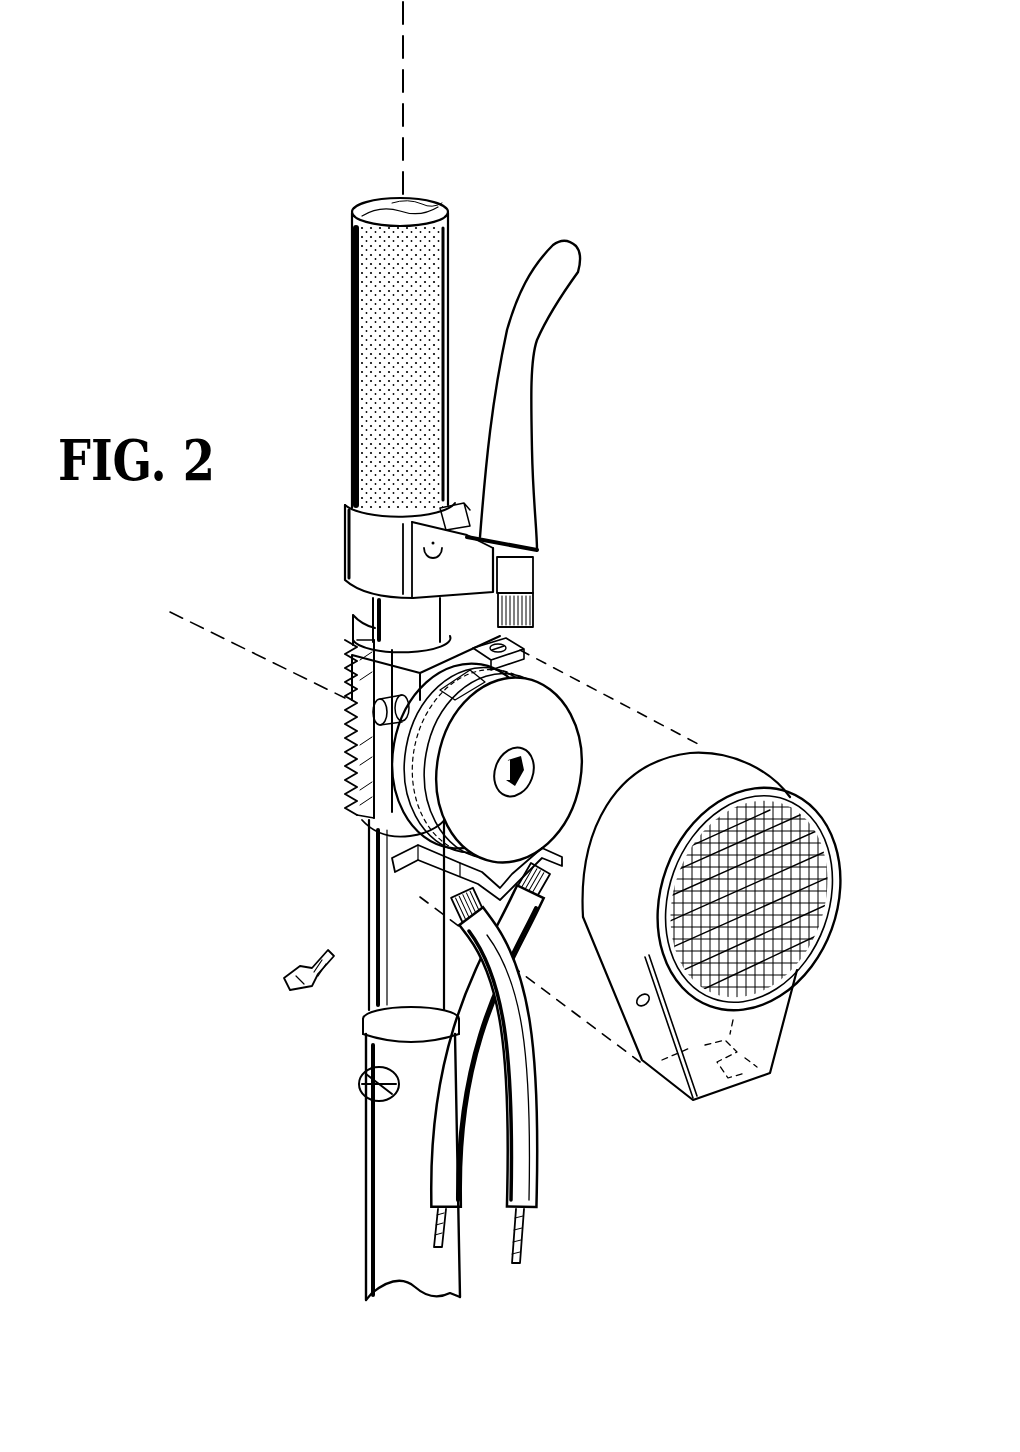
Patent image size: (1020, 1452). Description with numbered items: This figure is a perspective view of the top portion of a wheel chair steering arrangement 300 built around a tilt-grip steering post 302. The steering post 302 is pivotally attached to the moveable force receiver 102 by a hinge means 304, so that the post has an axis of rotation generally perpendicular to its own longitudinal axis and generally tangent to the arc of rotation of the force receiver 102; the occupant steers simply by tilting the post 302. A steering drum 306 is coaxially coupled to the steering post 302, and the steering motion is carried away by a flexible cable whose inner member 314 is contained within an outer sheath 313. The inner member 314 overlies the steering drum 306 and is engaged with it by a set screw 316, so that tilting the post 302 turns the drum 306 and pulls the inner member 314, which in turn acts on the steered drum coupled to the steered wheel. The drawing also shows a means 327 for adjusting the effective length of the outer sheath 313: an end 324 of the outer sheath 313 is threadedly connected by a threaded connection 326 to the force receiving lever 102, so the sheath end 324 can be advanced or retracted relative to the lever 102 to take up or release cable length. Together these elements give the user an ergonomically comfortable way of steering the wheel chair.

The force receiver 102 is at (393, 1135).
The clamp assembly 300 is at (585, 568).
The tilt-grip steering post 302 is at (372, 312).
The hinge means 304 is at (347, 733).
The steering drum 306 is at (572, 710).
The outer sheath 313 is at (527, 1075).
The inner member 314 is at (527, 1235).
The set screw 316 is at (512, 655).
The end of outer sheath 324 is at (452, 893).
The threaded connection 326 is at (447, 870).
The means for adjusting the effective length of the outer sheath 327 is at (590, 790).